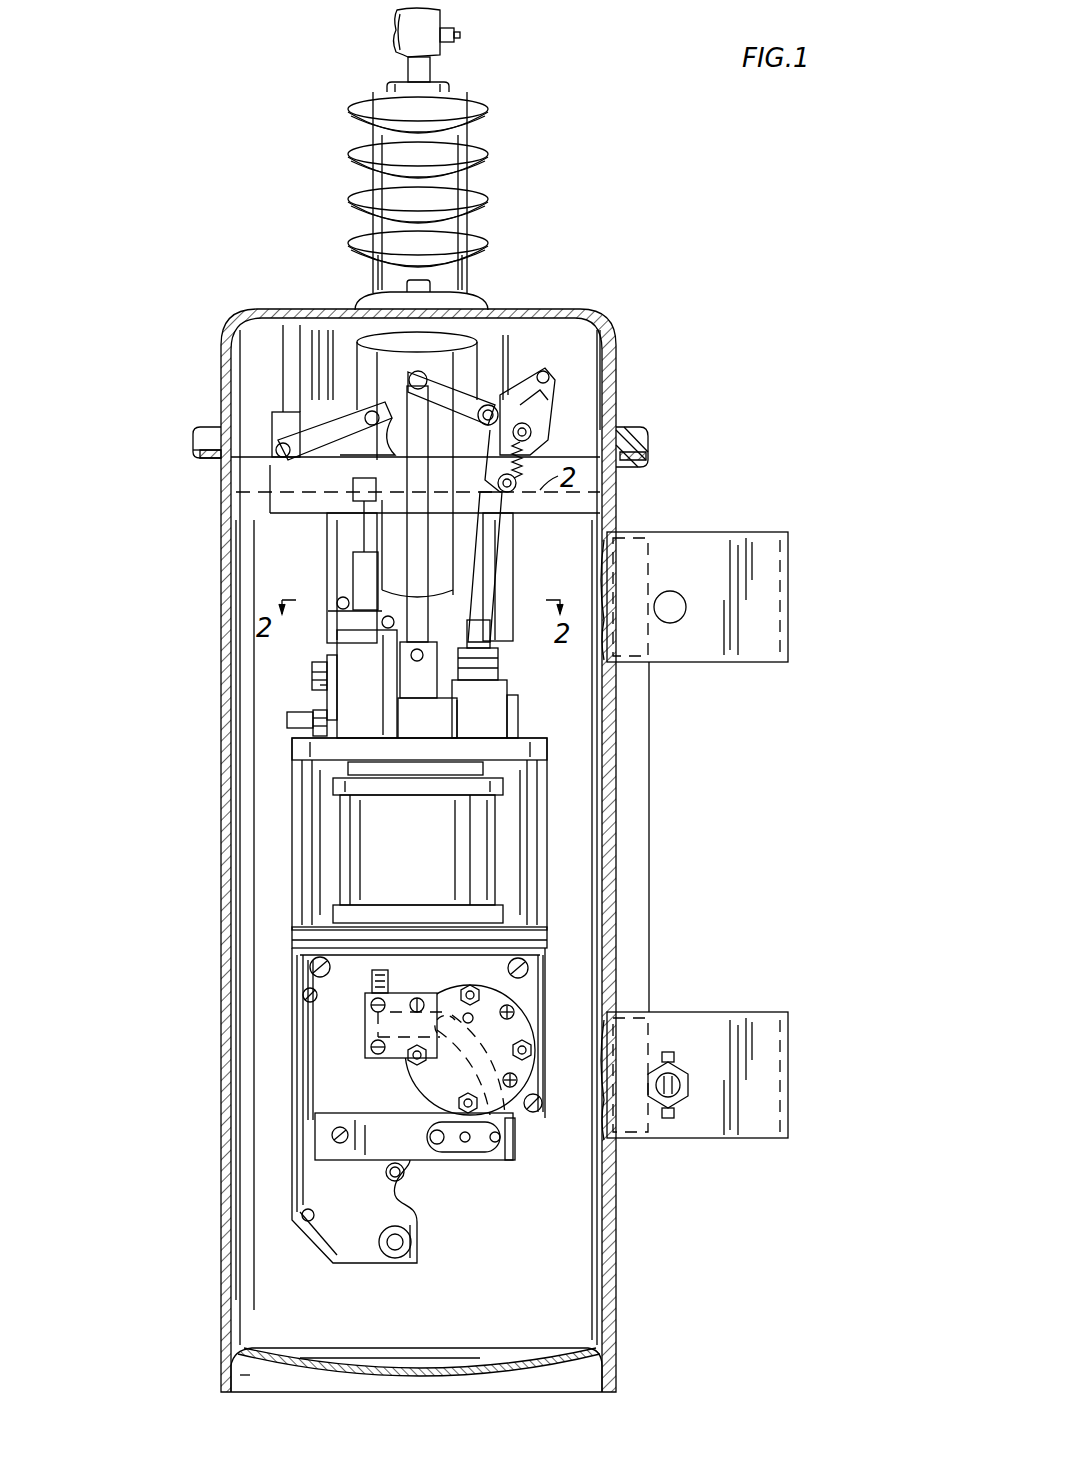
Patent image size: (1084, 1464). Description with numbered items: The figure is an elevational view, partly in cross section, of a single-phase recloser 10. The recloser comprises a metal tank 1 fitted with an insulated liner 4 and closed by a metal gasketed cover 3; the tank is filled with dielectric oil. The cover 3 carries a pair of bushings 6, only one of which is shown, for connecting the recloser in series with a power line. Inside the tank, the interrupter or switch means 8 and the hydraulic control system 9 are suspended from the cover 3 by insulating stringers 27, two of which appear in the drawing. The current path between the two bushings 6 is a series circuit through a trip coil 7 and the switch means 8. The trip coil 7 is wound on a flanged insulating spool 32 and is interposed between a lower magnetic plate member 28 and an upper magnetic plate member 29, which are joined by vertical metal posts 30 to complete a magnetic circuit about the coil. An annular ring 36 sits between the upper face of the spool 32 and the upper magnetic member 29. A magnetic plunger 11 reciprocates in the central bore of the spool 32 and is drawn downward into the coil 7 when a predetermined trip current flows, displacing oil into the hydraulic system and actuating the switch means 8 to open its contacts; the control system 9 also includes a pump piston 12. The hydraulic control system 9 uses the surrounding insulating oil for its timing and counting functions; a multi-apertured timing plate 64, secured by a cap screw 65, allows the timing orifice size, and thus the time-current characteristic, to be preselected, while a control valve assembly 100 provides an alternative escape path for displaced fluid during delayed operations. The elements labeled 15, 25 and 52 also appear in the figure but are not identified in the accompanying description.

The metal tank 1 is at (222, 881).
The metal gasketed cover 3 is at (617, 384).
The insulated liner 4 is at (235, 853).
The bushings 6 is at (487, 235).
The trip coil 7 is at (419, 856).
The interrupter switch means 8 is at (288, 1038).
The hydraulic control system 9 is at (545, 711).
The single-phase recloser 10 is at (172, 570).
The magnetic plunger 11 is at (428, 694).
The pump piston 12 is at (495, 652).
The stop block 15 is at (352, 502).
The mounting plate 25 is at (330, 456).
The insulating stringers 27 is at (340, 538).
The lower magnetic plate member 28 is at (547, 928).
The upper magnetic plate member 29 is at (547, 745).
The vertical metal posts 30 is at (545, 870).
The flanged insulating spool 32 is at (335, 788).
The annular ring 36 is at (530, 768).
The link rod 52 is at (473, 569).
The timing plate 64 is at (318, 663).
The cap screw 65 is at (320, 685).
The control valve assembly 100 is at (288, 722).